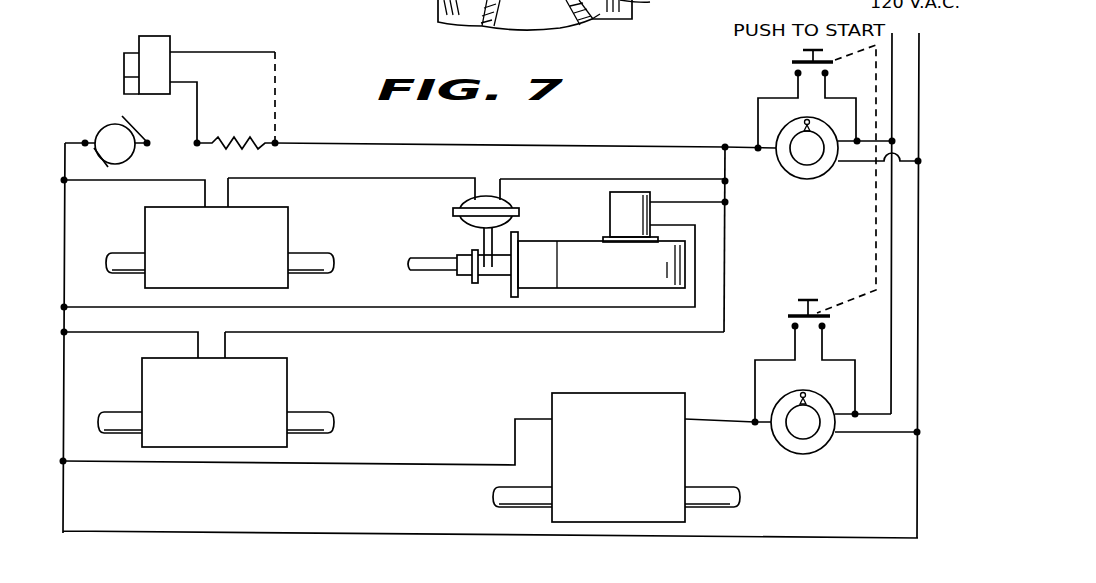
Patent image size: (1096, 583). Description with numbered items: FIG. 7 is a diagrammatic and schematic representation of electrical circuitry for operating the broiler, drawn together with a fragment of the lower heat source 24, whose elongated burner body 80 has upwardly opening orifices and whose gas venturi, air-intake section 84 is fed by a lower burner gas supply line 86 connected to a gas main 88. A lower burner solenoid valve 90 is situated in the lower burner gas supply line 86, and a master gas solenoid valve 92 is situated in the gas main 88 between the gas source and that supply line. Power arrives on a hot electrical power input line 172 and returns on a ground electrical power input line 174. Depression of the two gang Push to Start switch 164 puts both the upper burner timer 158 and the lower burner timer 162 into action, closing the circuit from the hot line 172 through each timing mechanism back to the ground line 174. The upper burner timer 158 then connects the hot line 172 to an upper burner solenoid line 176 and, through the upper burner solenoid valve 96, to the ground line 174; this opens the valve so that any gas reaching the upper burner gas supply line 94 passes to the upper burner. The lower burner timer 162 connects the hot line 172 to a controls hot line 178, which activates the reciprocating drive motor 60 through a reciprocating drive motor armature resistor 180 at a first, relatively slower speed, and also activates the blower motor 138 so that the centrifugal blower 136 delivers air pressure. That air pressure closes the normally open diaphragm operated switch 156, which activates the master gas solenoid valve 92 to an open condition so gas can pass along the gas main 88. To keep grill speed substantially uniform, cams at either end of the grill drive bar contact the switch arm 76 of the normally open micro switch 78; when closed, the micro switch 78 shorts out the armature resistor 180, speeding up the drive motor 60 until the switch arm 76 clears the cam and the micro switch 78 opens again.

The lower heat source 24 is at (620, 0).
The reciprocating drive motor 60 is at (107, 123).
The switch arm 76 is at (124, 53).
The micro switch 78 is at (172, 42).
The burner body 80 is at (438, 8).
The gas venturi, air-intake section 84 is at (600, 14).
The lower burner gas supply line 86 is at (320, 412).
The gas main 88 is at (127, 253).
The lower burner solenoid valve 90 is at (240, 447).
The master gas solenoid valve 92 is at (268, 207).
The upper burner gas supply line 94 is at (693, 487).
The upper burner solenoid valve 96 is at (613, 393).
The centrifugal blower 136 is at (546, 264).
The blower motor 138 is at (610, 215).
The diaphragm operated switch 156 is at (470, 200).
The upper burner timer 158 is at (800, 455).
The lower burner timer 162 is at (780, 128).
The Push to Start switch 164 is at (800, 62).
The hot electrical power input line 172 is at (890, 207).
The ground electrical power input line 174 is at (920, 293).
The upper burner solenoid line 176 is at (713, 419).
The controls hot line 178 is at (624, 147).
The reciprocating drive motor armature resistor 180 is at (253, 133).